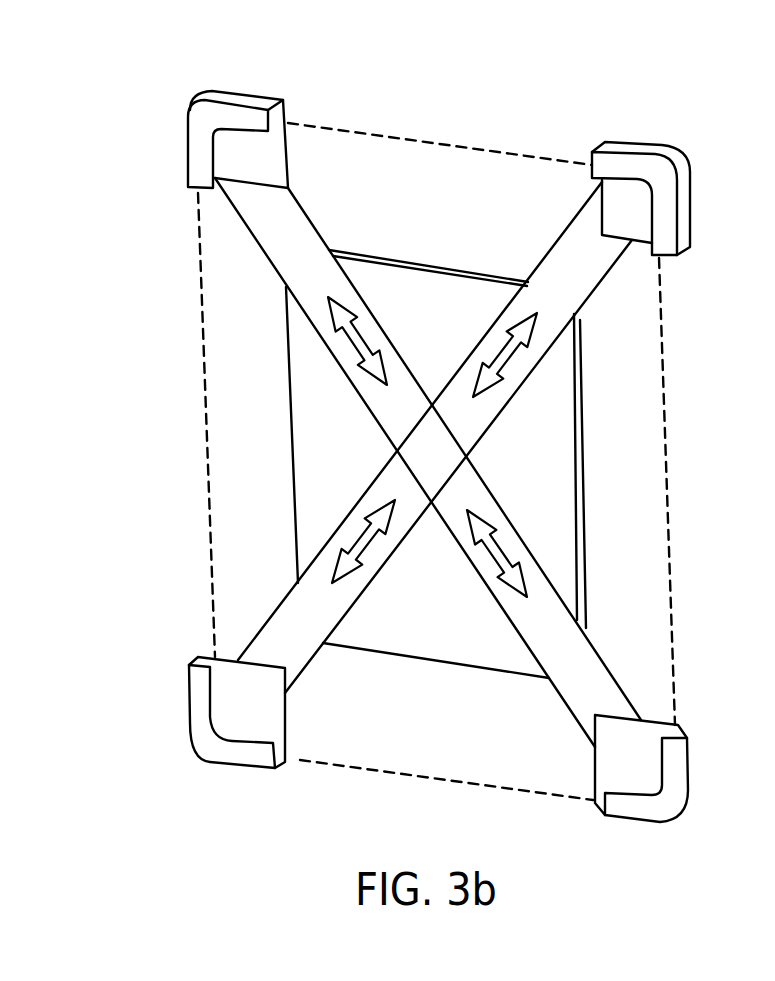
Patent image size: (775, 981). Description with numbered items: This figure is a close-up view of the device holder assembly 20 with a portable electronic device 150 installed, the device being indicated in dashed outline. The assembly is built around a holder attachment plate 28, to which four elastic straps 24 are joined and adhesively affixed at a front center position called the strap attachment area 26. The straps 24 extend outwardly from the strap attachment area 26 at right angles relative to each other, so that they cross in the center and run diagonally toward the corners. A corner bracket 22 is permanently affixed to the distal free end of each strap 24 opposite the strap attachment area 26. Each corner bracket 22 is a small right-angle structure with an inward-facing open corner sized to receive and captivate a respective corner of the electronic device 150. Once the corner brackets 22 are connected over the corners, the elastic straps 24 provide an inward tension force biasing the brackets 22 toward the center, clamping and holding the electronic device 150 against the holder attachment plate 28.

The device holder assembly 20 is at (148, 155).
The corner bracket 22 is at (252, 92).
The elastic strap 24 is at (298, 263).
The strap attachment area 26 is at (430, 452).
The holder attachment plate 28 is at (580, 422).
The portable electronic device 150 is at (208, 507).